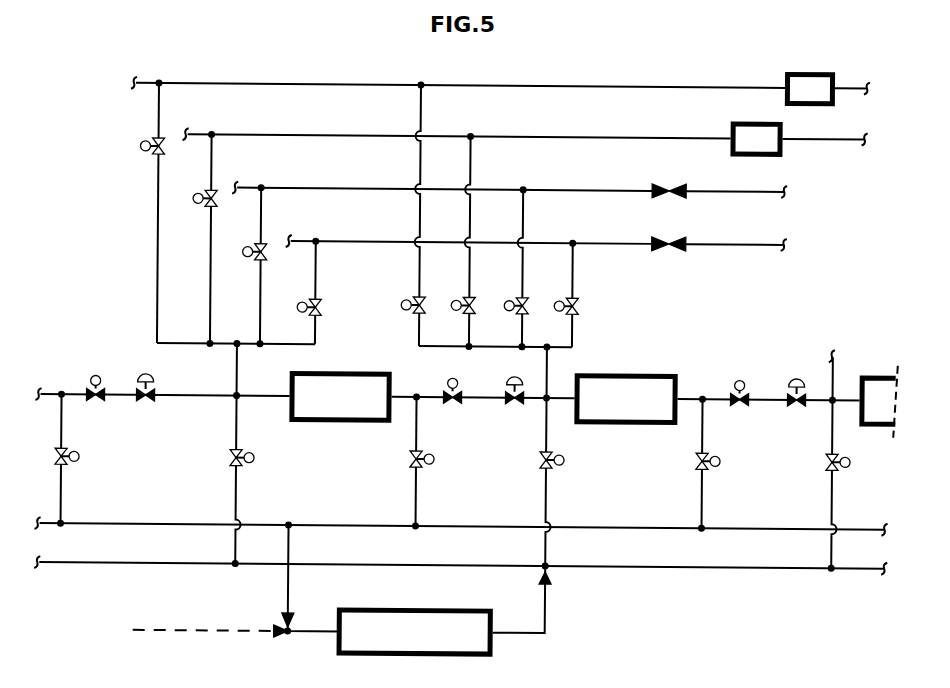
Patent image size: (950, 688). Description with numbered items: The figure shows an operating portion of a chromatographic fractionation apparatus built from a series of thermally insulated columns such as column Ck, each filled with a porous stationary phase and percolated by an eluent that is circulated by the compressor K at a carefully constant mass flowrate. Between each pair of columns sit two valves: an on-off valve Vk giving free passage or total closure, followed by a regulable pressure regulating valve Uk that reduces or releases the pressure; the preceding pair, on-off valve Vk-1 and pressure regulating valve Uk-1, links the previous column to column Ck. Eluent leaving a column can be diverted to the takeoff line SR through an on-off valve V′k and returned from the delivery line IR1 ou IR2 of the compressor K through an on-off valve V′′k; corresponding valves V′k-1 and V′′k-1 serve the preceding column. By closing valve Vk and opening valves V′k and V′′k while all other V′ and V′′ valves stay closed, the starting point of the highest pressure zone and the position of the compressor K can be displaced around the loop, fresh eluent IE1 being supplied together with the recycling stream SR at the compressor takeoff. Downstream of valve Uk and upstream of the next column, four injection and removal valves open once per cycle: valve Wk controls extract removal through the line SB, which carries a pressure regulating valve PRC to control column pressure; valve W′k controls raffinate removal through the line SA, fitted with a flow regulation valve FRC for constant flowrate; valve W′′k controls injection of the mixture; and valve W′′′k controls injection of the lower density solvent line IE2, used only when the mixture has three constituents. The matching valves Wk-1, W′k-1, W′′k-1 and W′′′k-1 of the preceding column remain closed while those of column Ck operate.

The lower density solvent injection line IE2 is at (525, 127).
The raffinate removal line SA is at (509, 180).
The extract removal line SB is at (536, 233).
The flow regulation valve FRC is at (669, 177).
The pressure regulating valve PRC is at (666, 262).
The compressor K is at (596, 358).
The chromatographic column Ck is at (340, 397).
The solvent injection valve of column k-1 W′′′k-1 is at (139, 213).
The mixture injection valve of column k-1 W′′k-1 is at (192, 238).
The raffinate removal valve of column k-1 W′k-1 is at (242, 265).
The extract removal valve of column k-1 Wk-1 is at (297, 292).
The solvent injection valve W′′′k is at (400, 215).
The mixture injection valve W′′k is at (451, 241).
The raffinate removal valve W′k is at (504, 268).
The extract removal valve Wk is at (555, 295).
The on-off valve of column k-1 Vk-1 is at (92, 378).
The pressure regulating valve of column k-1 Uk-1 is at (144, 379).
The on-off valve Vk is at (450, 382).
The pressure regulating valve Uk is at (512, 383).
The removal on-off valve of column k-1 V′k-1 is at (87, 458).
The recycling injection on-off valve of column k-1 V′′k-1 is at (263, 454).
The removal on-off valve V′k is at (435, 461).
The recycling injection on-off valve V′′k is at (544, 490).
The recycling removal line SR is at (461, 567).
The recycling solvent injection line IR1 ou IR2 is at (460, 583).
The fresh eluent line IE1 is at (210, 621).